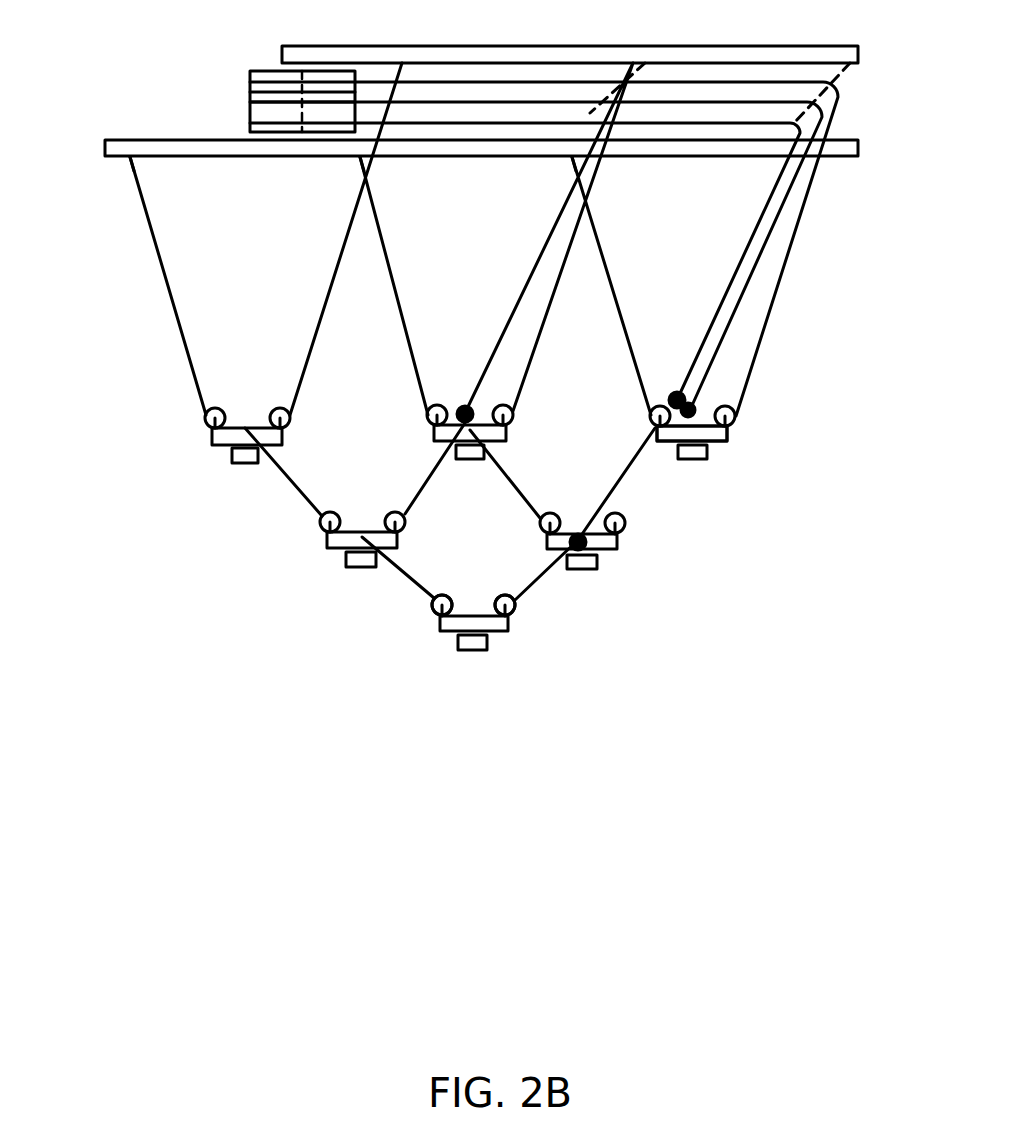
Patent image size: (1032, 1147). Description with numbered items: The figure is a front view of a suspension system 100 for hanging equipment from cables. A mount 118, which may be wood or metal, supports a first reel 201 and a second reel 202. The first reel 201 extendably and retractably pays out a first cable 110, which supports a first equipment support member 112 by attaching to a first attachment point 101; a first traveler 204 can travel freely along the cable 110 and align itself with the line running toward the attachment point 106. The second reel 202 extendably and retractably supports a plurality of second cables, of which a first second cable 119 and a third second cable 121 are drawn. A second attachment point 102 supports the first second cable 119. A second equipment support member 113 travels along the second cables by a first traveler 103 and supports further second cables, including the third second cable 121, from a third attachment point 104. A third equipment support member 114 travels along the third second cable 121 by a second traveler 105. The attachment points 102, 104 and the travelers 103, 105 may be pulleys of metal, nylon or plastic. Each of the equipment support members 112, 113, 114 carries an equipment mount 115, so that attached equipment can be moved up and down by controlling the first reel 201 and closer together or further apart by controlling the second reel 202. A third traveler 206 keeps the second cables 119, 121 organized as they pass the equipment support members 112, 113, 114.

The suspension system 100 is at (477, 333).
The mount 118 is at (282, 47).
The first reel 201 is at (250, 72).
The second reel 202 is at (250, 107).
The attachment point 106 is at (130, 158).
The first cable 110 is at (176, 330).
The first attachment point 101 is at (280, 408).
The second attachment point 102 is at (245, 428).
The first traveler 103 is at (397, 512).
The third attachment point 104 is at (373, 537).
The second traveler 105 is at (472, 580).
The third equipment support member 114 is at (530, 636).
The second equipment support member 113 is at (645, 545).
The first equipment support member 112 is at (765, 427).
The first traveler 204 is at (720, 441).
The equipment mount 115 is at (690, 459).
The third traveler 206 is at (460, 404).
The first of the plurality of second cables 119 is at (302, 500).
The third of the plurality of second cables 121 is at (412, 592).